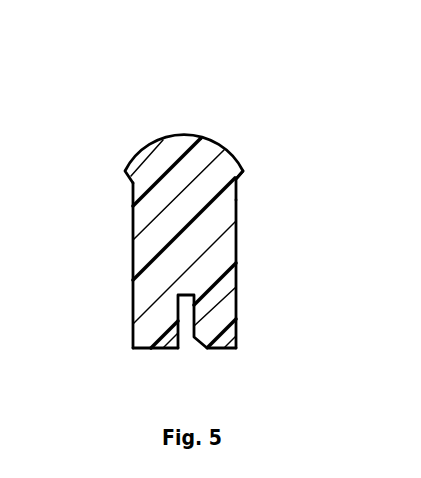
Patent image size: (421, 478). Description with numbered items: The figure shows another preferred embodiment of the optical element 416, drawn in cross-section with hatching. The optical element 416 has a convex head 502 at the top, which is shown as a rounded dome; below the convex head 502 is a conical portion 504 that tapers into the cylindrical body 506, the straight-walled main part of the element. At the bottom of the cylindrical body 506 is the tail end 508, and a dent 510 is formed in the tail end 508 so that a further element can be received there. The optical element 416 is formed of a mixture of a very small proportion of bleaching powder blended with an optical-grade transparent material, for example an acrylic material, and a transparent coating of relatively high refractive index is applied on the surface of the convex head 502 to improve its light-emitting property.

The optical element 416 is at (91, 90).
The convex head 502 is at (207, 140).
The conical portion 504 is at (243, 173).
The cylindrical body 506 is at (237, 238).
The tail end 508 is at (222, 349).
The dent 510 is at (196, 317).